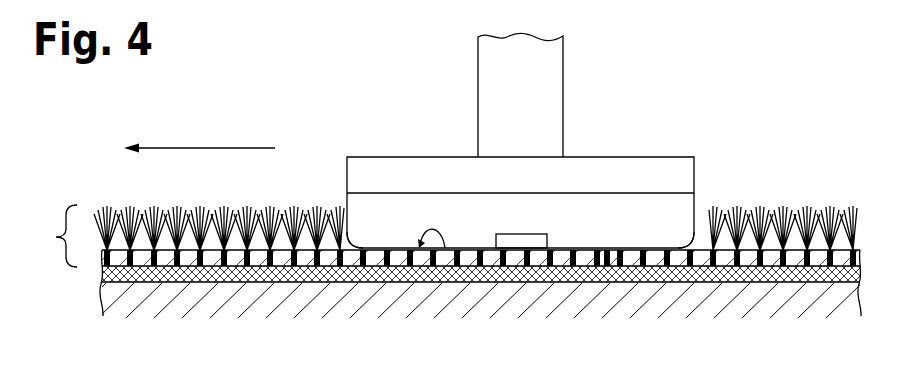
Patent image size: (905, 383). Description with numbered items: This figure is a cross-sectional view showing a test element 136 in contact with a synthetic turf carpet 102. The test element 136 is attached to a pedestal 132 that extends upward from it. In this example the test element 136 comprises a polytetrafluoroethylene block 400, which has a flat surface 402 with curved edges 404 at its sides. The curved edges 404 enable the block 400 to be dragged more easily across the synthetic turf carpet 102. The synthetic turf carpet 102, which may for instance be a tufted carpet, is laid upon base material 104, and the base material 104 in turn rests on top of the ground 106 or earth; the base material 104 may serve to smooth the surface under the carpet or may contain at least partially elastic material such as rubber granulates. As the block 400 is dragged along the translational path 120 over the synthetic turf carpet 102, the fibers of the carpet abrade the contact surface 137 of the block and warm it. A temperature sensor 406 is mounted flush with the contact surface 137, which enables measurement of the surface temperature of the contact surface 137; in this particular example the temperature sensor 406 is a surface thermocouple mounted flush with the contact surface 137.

The synthetic turf carpet 102 is at (432, 236).
The base material 104 is at (102, 273).
The ground 106 is at (193, 290).
The translational path 120 is at (198, 146).
The pedestal 132 is at (550, 60).
The test element 136 is at (444, 172).
The contact surface 137 is at (443, 250).
The polytetrafluoroethylene block 400 is at (598, 210).
The flat surface 402 is at (609, 256).
The curved edges 404 is at (360, 232).
The temperature sensor 406 is at (512, 240).